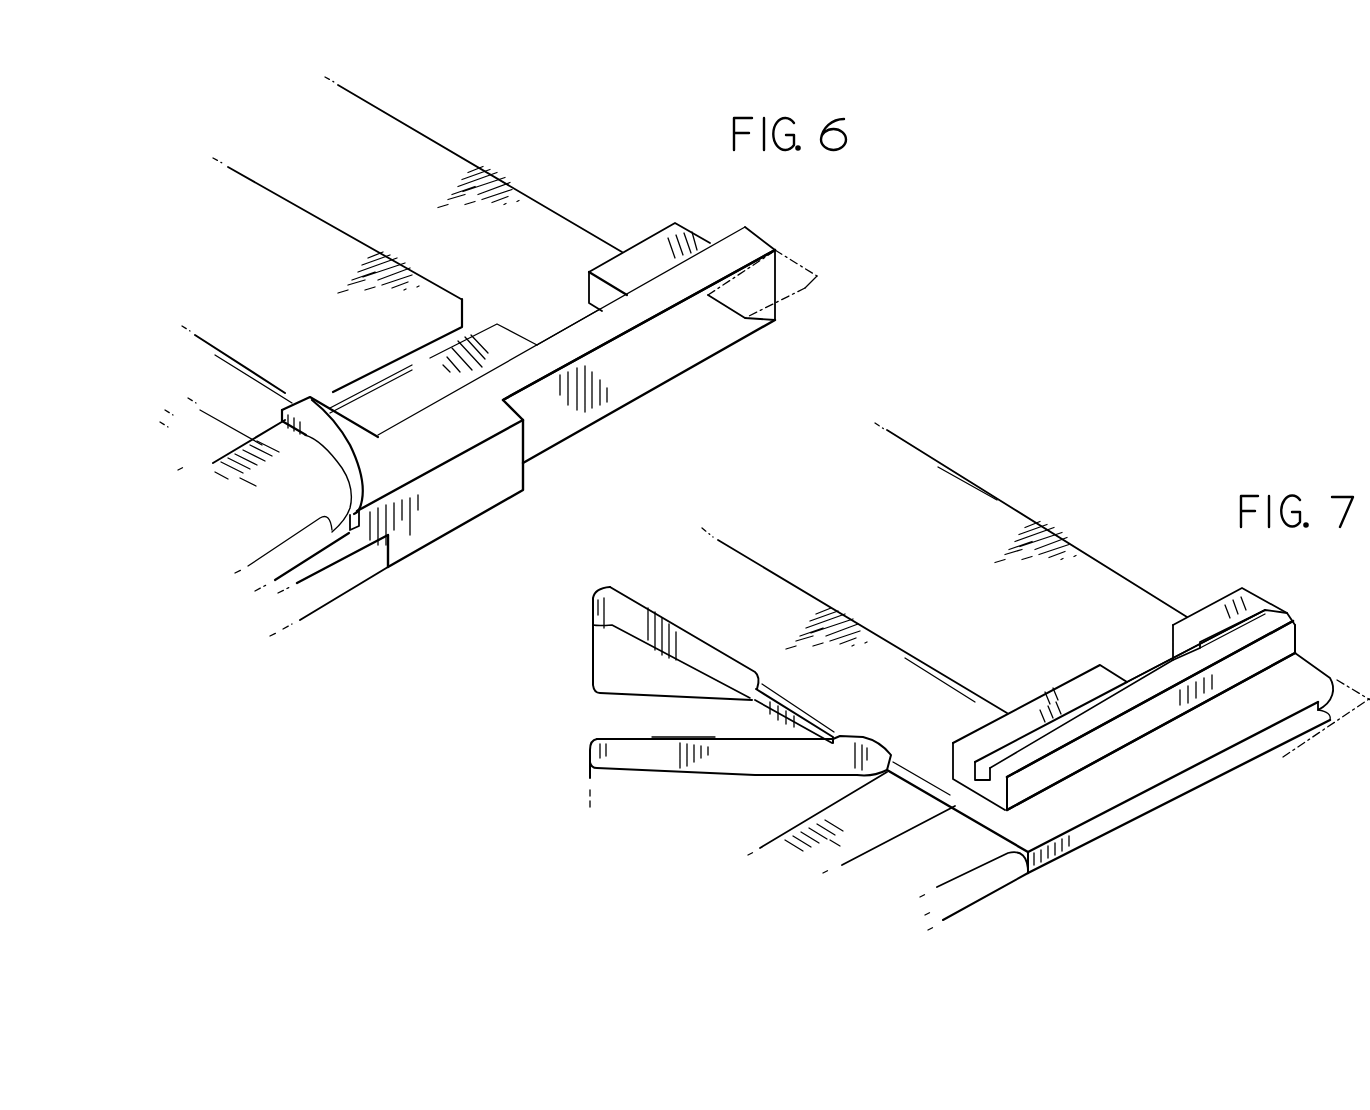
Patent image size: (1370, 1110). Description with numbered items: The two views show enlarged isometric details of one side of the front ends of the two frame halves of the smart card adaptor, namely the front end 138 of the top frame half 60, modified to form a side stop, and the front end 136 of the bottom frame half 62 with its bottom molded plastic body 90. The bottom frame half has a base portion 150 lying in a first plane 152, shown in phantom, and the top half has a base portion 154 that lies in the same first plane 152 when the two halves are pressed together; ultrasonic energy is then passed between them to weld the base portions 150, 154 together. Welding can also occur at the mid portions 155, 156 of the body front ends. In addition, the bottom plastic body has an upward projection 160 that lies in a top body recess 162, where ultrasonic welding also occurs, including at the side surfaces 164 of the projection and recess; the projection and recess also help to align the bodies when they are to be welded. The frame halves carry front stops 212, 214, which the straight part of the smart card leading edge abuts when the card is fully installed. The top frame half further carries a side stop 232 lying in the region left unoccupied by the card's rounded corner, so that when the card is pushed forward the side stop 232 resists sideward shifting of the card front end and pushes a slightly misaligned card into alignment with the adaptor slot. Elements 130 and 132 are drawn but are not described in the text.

In FIG. 6, the top frame half 60 is at (487, 150).
In FIG. 6, the first contact strip 132 is at (522, 190).
In FIG. 6, the mid portion 155 is at (340, 188).
In FIG. 6, the front end 138 is at (430, 298).
In FIG. 6, the first plane 152 is at (833, 299).
In FIG. 7, the first plane 152 is at (1287, 758).
In FIG. 6, the base portion 154 is at (647, 318).
In FIG. 6, the top body recess 162 is at (497, 360).
In FIG. 6, the front stop 212 is at (313, 433).
In FIG. 6, the side stop 232 is at (387, 483).
In FIG. 7, the bottom frame half 62 is at (1047, 510).
In FIG. 7, the first contact strip 130 is at (1123, 572).
In FIG. 7, the mid portion 156 is at (730, 558).
In FIG. 7, the front end 136 is at (880, 652).
In FIG. 7, the bottom molded plastic body 90 is at (802, 578).
In FIG. 7, the front stop 214 is at (806, 708).
In FIG. 7, the base portion 150 is at (1052, 817).
In FIG. 7, the upward projection 160 is at (1125, 703).
In FIG. 7, the side surfaces 164 is at (1078, 755).